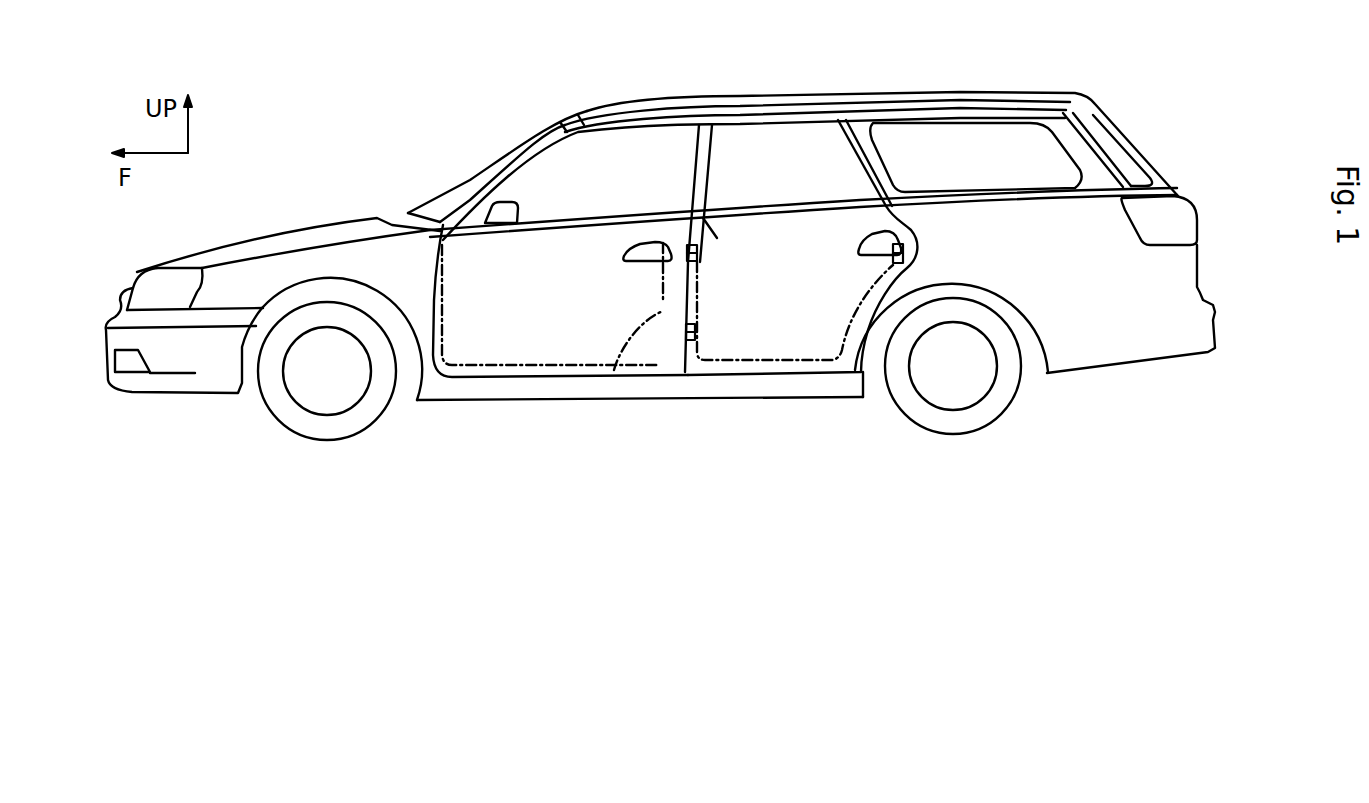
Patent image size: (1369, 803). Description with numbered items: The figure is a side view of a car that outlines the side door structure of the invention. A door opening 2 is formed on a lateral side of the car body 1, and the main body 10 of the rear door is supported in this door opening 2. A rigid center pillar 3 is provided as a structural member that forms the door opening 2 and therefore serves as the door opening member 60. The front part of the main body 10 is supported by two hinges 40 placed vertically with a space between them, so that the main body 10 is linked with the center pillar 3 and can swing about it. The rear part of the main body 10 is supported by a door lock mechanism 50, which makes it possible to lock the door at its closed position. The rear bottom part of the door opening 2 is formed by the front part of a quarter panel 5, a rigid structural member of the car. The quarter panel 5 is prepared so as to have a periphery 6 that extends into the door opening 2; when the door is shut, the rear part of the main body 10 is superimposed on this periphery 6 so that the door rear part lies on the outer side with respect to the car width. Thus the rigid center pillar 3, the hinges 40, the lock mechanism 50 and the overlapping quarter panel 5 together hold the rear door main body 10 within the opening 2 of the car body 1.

The car body 1 is at (591, 97).
The door opening 2 is at (735, 338).
The center pillar 3 is at (614, 370).
The quarter panel 5 is at (962, 253).
The periphery 6 is at (868, 362).
The main body of rear door 10 is at (770, 343).
The hinges 40 is at (697, 250).
The door lock mechanism 50 is at (904, 250).
The door opening member 60 is at (849, 336).